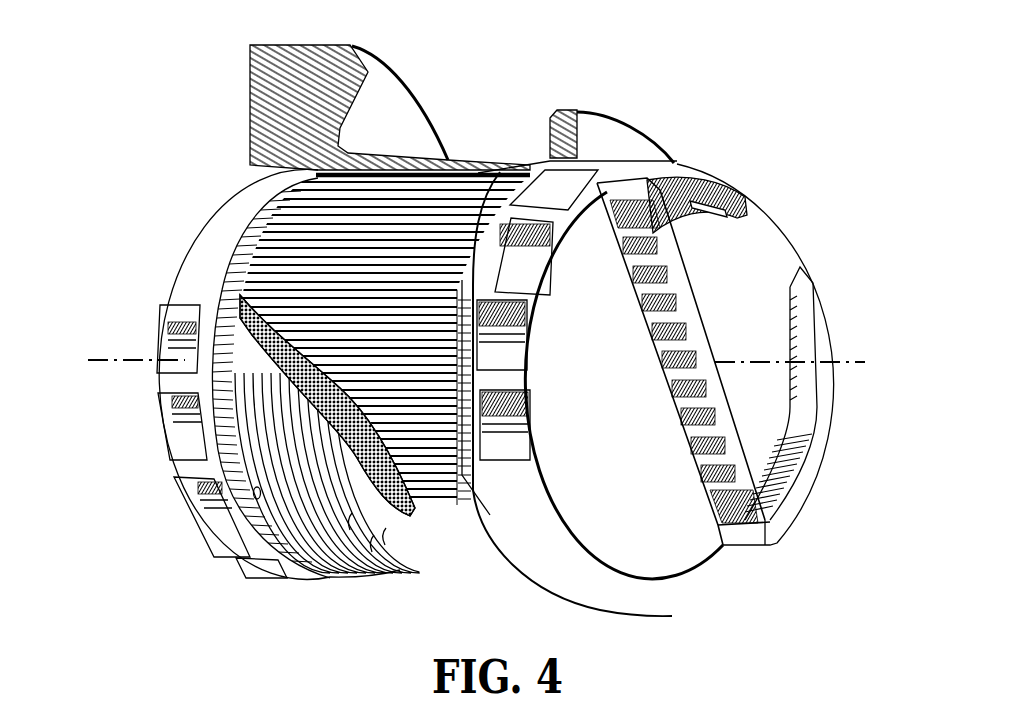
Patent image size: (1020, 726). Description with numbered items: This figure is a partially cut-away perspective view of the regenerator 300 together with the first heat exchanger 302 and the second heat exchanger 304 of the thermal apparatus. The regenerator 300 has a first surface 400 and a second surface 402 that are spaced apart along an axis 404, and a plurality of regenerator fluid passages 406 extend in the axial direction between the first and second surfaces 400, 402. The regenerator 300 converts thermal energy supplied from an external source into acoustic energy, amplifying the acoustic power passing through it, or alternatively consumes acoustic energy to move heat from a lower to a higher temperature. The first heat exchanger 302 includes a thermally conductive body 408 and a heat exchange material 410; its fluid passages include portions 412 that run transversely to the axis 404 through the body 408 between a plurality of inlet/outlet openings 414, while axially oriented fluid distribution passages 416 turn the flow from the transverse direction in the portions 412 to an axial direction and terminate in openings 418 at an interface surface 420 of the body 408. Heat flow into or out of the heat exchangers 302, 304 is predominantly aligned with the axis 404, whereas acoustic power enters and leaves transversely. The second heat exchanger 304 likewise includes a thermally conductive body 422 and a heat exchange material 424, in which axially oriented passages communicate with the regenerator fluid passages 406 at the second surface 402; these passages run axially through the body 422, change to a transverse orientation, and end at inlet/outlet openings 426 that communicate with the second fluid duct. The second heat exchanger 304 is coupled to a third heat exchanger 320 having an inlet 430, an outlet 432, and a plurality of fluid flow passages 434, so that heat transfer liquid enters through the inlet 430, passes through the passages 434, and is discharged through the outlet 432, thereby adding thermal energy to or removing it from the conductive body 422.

The regenerator 300 is at (427, 481).
The first heat exchanger 302 is at (117, 148).
The second heat exchanger 304 is at (728, 572).
The third heat exchanger 320 is at (787, 238).
The first surface 400 is at (247, 253).
The second surface 402 is at (443, 270).
The axis 404 is at (100, 365).
The regenerator fluid passages 406 is at (455, 488).
The thermally conductive body 408 is at (207, 210).
The heat exchange material 410 is at (263, 208).
The fluid passage portions 412 is at (185, 486).
The inlet/outlet openings 414 is at (240, 570).
The axially oriented fluid distribution passages 416 is at (168, 322).
The openings 418 is at (356, 523).
The interface surface 420 is at (307, 540).
The thermally conductive body 422 is at (595, 568).
The heat exchange material 424 is at (570, 607).
The inlet/outlet openings 426 is at (553, 170).
The inlet 430 is at (690, 203).
The outlet 432 is at (795, 455).
The fluid flow passages 434 is at (672, 357).